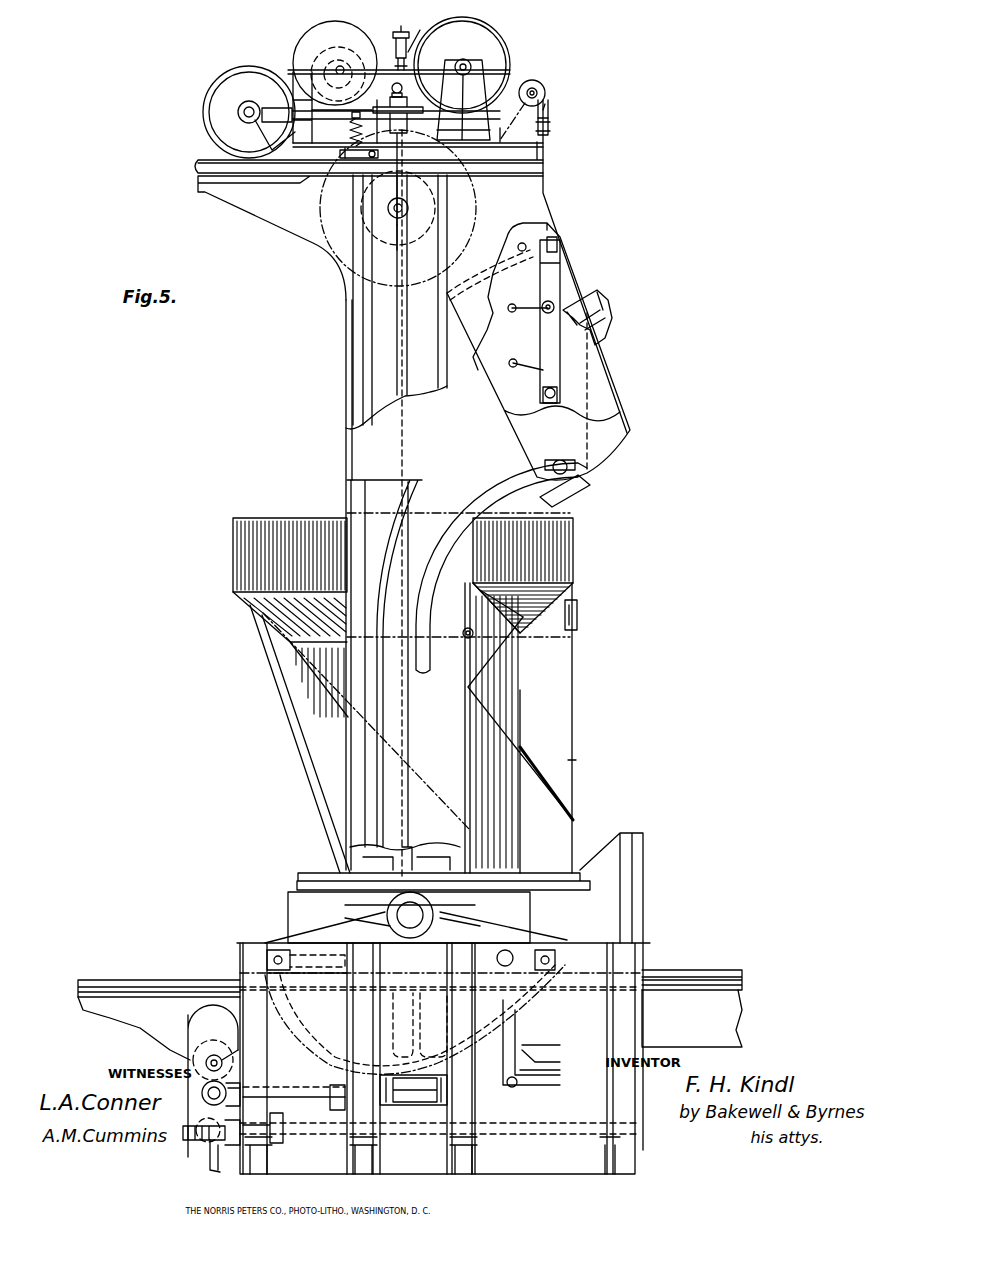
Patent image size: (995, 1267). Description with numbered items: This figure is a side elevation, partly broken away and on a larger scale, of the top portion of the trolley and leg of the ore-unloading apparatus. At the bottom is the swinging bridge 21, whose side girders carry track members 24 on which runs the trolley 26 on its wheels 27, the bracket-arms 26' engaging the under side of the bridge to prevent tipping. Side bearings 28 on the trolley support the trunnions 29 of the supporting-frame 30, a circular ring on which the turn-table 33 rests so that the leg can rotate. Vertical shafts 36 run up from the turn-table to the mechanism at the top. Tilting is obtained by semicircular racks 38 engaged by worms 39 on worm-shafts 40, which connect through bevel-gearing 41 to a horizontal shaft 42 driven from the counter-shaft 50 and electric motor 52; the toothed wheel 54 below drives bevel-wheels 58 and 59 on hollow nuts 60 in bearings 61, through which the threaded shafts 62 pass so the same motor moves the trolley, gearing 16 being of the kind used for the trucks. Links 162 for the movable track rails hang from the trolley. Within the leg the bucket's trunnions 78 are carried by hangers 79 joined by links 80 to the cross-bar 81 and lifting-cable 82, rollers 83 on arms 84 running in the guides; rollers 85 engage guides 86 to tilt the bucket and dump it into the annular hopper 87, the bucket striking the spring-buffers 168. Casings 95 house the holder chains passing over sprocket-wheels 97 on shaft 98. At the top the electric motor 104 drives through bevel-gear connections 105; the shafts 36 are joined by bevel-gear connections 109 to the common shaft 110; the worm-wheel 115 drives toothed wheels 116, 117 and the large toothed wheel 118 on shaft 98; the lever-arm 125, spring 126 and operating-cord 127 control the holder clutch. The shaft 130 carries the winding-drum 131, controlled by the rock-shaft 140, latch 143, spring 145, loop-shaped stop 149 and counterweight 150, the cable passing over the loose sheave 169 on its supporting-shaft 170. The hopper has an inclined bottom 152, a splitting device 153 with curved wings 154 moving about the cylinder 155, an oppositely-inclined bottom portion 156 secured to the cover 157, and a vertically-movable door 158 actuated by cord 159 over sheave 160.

The toothed-gearing connections 16 is at (375, 786).
The swinging bridge 21 is at (692, 1018).
The track members 24 is at (200, 979).
The trolley 26 is at (440, 1058).
The bracket-arms 26' is at (432, 1153).
The wheels 27 is at (268, 942).
The side bearings 28 is at (416, 917).
The trunnions 29 is at (410, 915).
The supporting-frame for turn-table 30 is at (409, 917).
The turn-table 33 is at (322, 872).
The vertical shafts 36 is at (355, 352).
The semicircular racks 38 is at (323, 1057).
The worms 39 is at (413, 1090).
The worm-shafts 40 is at (318, 1094).
The bevel-gearing 41 is at (200, 1090).
The horizontal shaft 42 is at (242, 1090).
The counter-shaft 50 is at (225, 1065).
The electric motor 52 is at (205, 1013).
The toothed wheel 54 is at (200, 1030).
The bevel-wheels 58 is at (212, 1150).
The bevel-wheels 59 is at (200, 1125).
The hollow nuts 60 is at (276, 1138).
The bearings 61 is at (294, 1100).
The threaded shafts 62 is at (570, 1125).
The trunnions 78 is at (560, 392).
The hangers 79 is at (562, 375).
The pivoted links 80 is at (550, 272).
The cross-bar 81 is at (560, 245).
The lifting-cable 82 is at (545, 162).
The rollers 83 is at (516, 368).
The arms 84 is at (547, 227).
The rollers 85 is at (592, 480).
The guides 86 is at (470, 506).
The hopper 87 is at (575, 563).
The outer casings 95 is at (350, 392).
The sprocket-wheels 97 is at (400, 242).
The shaft 98 is at (410, 206).
The electric motor 104 is at (249, 112).
The bevel-gear connections 105 is at (244, 118).
The bevel-gear connections 109 is at (408, 102).
The common shaft 110 is at (387, 83).
The worm-wheel 115 is at (399, 63).
The toothed wheel 116 is at (309, 97).
The toothed wheel 117 is at (336, 105).
The large toothed wheel 118 is at (322, 190).
The lever-arm 125 is at (352, 166).
The spring 126 is at (350, 135).
The operating-cord 127 is at (335, 162).
The shaft 130 is at (463, 87).
The winding-drum 131 is at (508, 50).
The rock-shaft 140 is at (518, 122).
The latch 143 is at (426, 32).
The spring 145 is at (390, 48).
The loop-shaped stop 149 is at (549, 131).
The counterweight 150 is at (530, 83).
The inclined bottom 152 is at (262, 630).
The splitting device 153 is at (525, 628).
The curved wings or shields 154 is at (480, 650).
The cylinder 155 is at (335, 680).
The oppositely-inclined bottom portion 156 is at (553, 620).
The cover or top portion 157 is at (527, 757).
The vertically-movable door 158 is at (590, 848).
The cord 159 is at (575, 705).
The sheave 160 is at (578, 615).
The links 162 is at (520, 1028).
The spring-buffers 168 is at (600, 292).
The loose sheave 169 is at (546, 91).
The supporting-shaft 170 is at (548, 103).